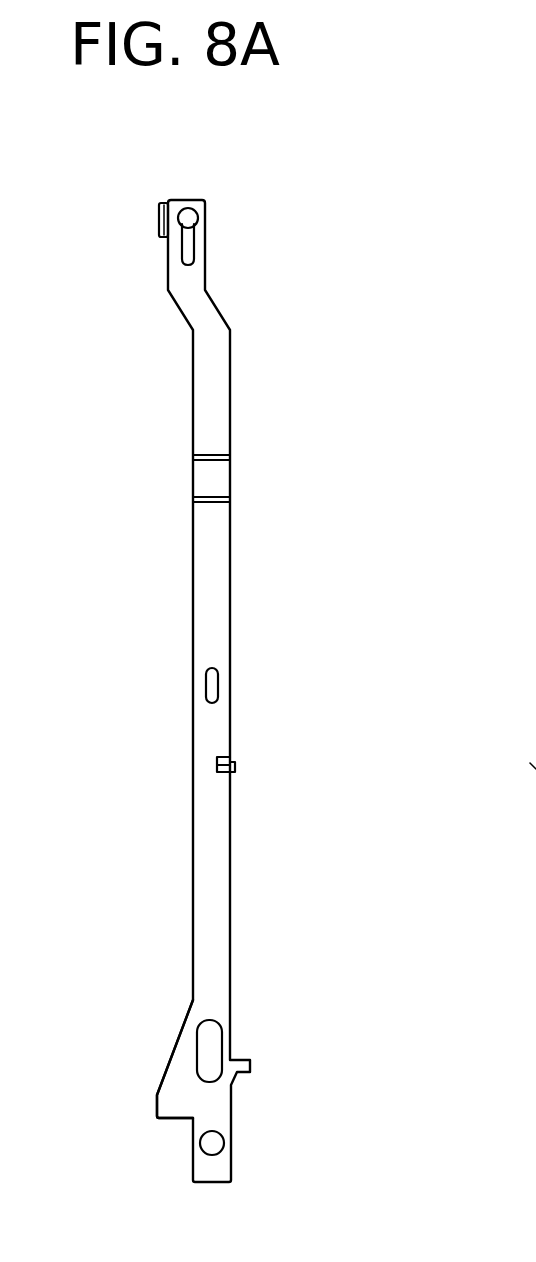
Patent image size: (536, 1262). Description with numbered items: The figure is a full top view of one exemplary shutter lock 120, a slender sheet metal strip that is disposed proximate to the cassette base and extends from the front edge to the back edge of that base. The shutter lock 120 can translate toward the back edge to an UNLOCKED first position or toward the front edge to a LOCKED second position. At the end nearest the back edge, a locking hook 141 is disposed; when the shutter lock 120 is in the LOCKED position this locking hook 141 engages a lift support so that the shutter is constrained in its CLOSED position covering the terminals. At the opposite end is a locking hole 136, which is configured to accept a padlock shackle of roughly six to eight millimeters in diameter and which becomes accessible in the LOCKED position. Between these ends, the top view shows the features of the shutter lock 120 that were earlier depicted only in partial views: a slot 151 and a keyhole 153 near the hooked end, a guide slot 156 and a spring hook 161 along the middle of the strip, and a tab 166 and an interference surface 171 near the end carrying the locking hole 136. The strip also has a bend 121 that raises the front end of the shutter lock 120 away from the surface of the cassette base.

The shutter lock 120 is at (148, 750).
The bend 121 is at (193, 477).
The locking hook 141 is at (159, 221).
The slot 151 is at (195, 233).
The keyhole 153 is at (188, 208).
The guide slot 156 is at (219, 683).
The spring hook 161 is at (236, 767).
The tab 166 is at (240, 1060).
The interference surface 171 is at (155, 1100).
The locking hole 136 is at (208, 1153).